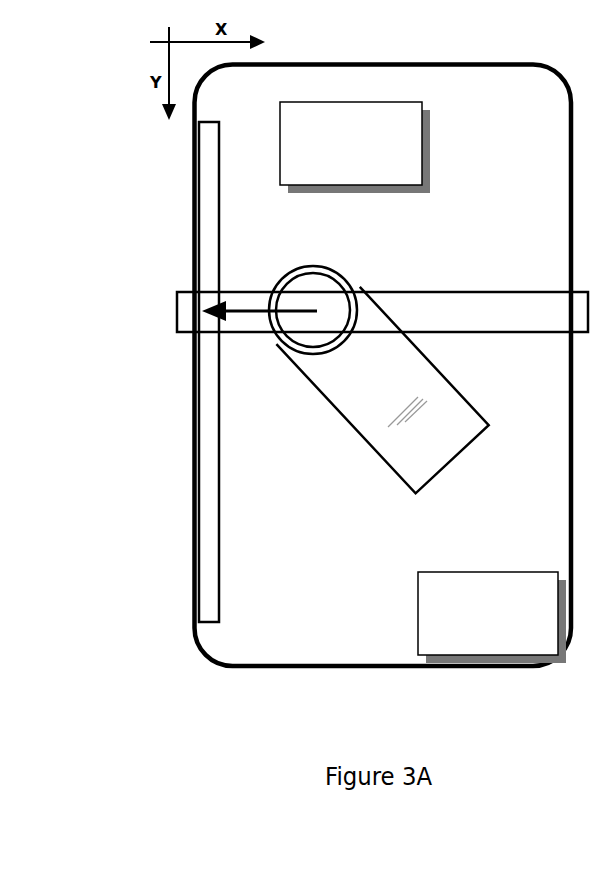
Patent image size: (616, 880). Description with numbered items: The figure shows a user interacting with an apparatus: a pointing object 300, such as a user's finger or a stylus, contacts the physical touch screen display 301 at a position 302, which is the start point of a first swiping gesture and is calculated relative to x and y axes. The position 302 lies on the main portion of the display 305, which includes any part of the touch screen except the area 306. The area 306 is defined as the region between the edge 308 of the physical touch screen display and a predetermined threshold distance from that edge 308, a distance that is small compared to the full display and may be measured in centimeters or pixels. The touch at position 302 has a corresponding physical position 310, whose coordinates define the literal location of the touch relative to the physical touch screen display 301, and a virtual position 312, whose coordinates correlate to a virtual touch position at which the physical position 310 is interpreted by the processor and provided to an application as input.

The pointing object 300 is at (382, 390).
The physical touch screen display 301 is at (329, 340).
The position 302 is at (355, 296).
The main portion of the display 305 is at (383, 366).
The area 306 is at (271, 377).
The edge 308 is at (139, 504).
The physical position 310 is at (438, 593).
The virtual position 312 is at (391, 108).